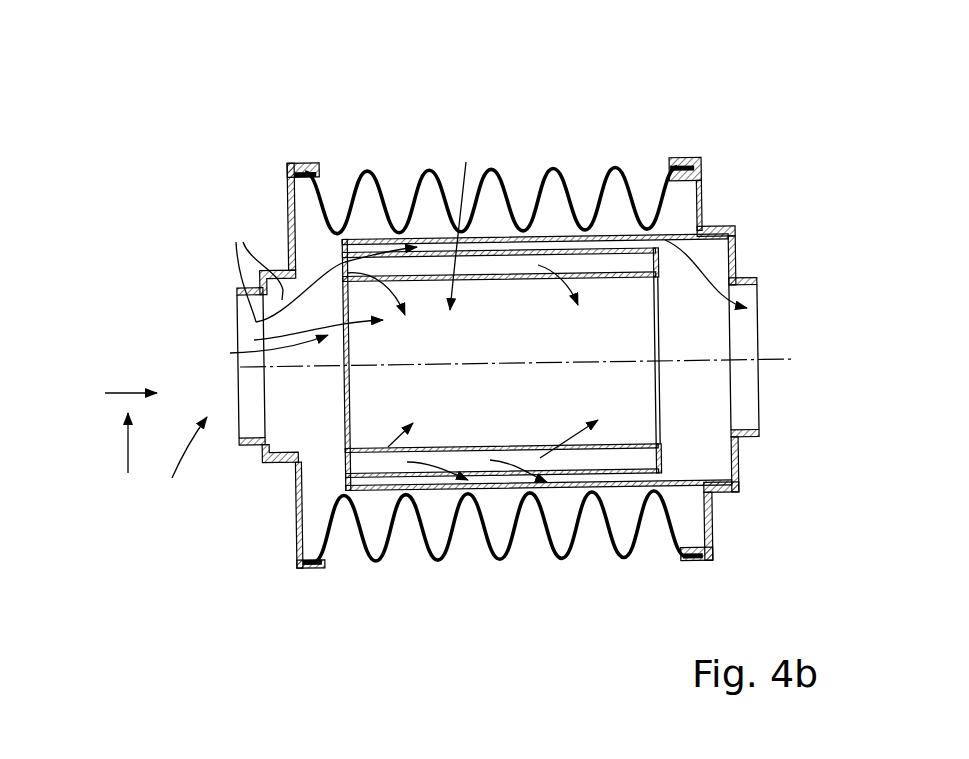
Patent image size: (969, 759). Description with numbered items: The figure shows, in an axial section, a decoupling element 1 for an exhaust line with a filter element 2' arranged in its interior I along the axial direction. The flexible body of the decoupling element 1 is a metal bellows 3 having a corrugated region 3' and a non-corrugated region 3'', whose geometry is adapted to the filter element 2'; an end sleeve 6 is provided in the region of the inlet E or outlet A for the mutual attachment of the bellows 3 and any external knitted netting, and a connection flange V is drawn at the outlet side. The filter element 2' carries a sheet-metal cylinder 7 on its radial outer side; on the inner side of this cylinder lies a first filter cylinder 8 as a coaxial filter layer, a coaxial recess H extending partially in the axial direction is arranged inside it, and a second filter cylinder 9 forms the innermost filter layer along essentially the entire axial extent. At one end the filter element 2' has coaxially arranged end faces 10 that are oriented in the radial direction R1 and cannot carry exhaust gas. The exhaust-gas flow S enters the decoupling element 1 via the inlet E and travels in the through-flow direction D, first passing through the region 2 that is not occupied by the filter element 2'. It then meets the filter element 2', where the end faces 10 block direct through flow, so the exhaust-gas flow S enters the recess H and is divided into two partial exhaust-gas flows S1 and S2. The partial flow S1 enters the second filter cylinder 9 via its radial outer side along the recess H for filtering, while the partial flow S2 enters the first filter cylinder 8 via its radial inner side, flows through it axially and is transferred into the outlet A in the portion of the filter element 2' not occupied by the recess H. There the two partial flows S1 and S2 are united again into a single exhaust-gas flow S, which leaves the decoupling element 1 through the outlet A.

The decoupling element 1 is at (360, 637).
The region not charged by the filter element 2 is at (246, 366).
The filter element 2' is at (539, 556).
The bellows 3 is at (491, 362).
The corrugated region 3' is at (499, 579).
The non-corrugated region 3'' is at (299, 377).
The end sleeve 6 is at (685, 158).
The sheet-metal cylinder 7 is at (693, 490).
The first filter cylinder 8 is at (658, 468).
The second filter cylinder 9 is at (634, 445).
The end faces 10 is at (336, 243).
The exhaust-gas flow S is at (240, 490).
The first partial exhaust-gas flow S1 is at (545, 268).
The second partial exhaust-gas flow S2 is at (790, 248).
The recess H is at (577, 263).
The interior I is at (459, 223).
The connection flange V is at (718, 227).
The through-flow direction D is at (122, 393).
The radial direction R1 is at (128, 448).
The inlet E is at (177, 457).
The outlet A is at (765, 417).